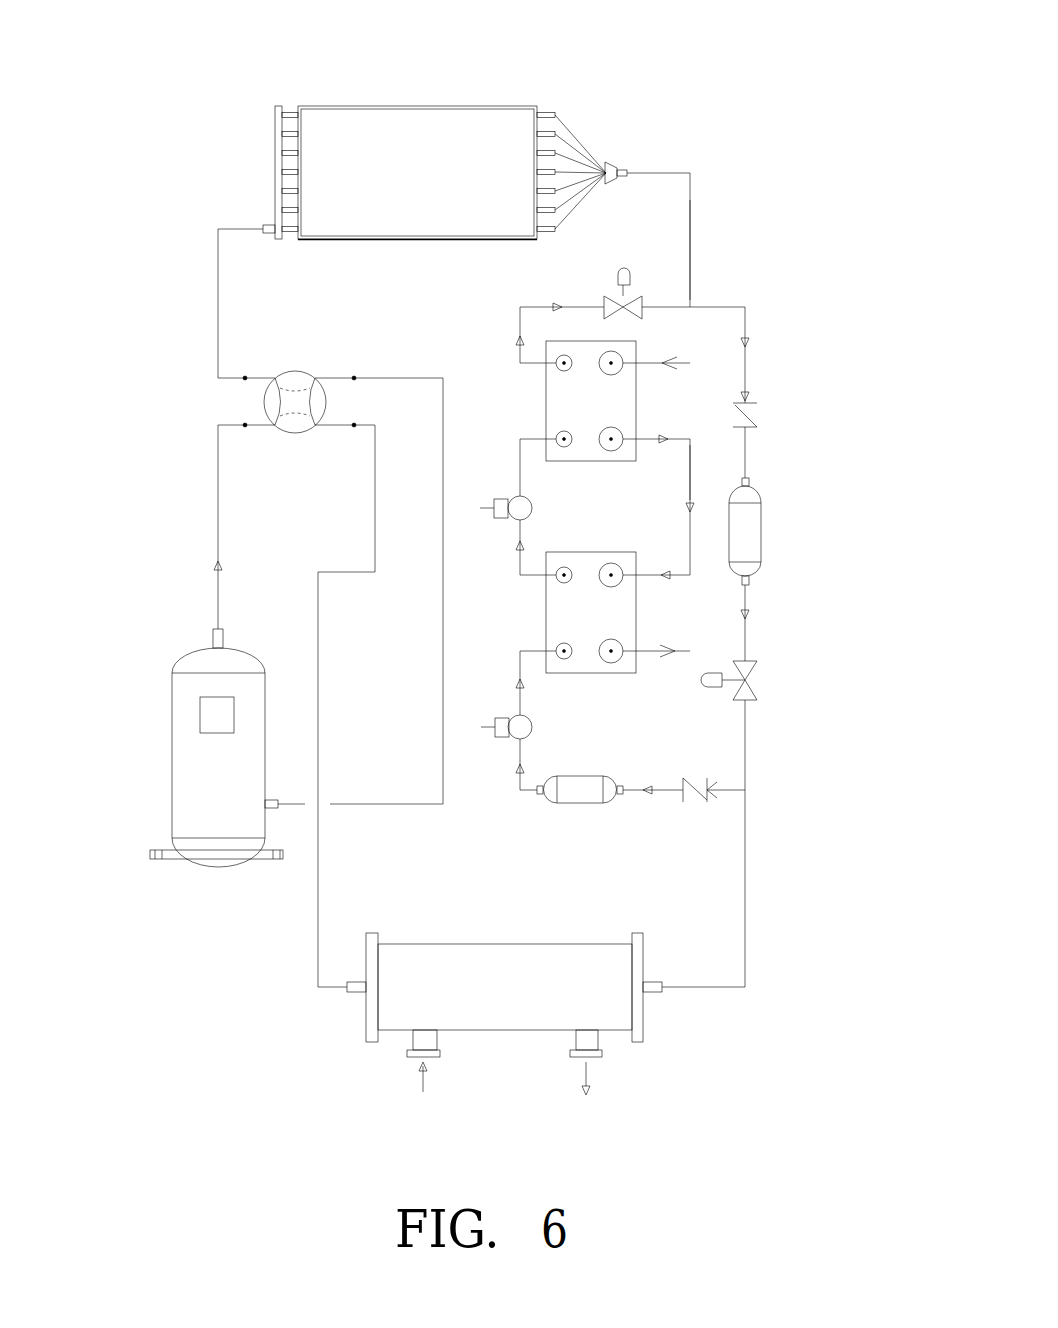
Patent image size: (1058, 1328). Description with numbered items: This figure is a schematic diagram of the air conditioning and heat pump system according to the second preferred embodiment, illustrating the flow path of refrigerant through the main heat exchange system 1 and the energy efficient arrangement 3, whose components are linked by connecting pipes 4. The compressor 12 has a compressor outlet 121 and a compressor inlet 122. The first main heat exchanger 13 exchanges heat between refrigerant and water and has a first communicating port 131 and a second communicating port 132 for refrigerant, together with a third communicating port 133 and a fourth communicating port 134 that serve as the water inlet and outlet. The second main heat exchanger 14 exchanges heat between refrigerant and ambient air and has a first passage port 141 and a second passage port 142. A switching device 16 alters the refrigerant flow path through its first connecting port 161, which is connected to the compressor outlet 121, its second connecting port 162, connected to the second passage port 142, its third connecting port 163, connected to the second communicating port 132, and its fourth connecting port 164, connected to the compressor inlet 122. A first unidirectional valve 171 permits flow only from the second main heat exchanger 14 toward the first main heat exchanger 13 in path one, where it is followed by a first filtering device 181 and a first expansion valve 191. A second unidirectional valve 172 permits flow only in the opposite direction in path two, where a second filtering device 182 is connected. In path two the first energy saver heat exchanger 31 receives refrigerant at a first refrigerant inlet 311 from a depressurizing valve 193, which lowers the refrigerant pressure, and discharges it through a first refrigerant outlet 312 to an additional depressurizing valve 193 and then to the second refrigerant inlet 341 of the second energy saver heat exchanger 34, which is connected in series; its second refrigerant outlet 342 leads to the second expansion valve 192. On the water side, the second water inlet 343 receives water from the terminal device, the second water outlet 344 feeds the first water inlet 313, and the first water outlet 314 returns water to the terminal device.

The main heat exchange system 1 is at (278, 901).
The energy efficient arrangement 3 is at (688, 459).
The connecting pipes 4 is at (690, 247).
The compressor 12 is at (185, 737).
The compressor outlet 121 is at (187, 640).
The compressor inlet 122 is at (279, 766).
The first main heat exchanger 13 is at (500, 1010).
The first communicating port 131 is at (681, 1004).
The second communicating port 132 is at (336, 1013).
The third communicating port 133 is at (389, 1054).
The fourth communicating port 134 is at (616, 1078).
The second main heat exchanger 14 is at (386, 125).
The first passage port 141 is at (634, 139).
The second passage port 142 is at (236, 210).
The switching device 16 is at (267, 402).
The first connecting port 161 is at (255, 438).
The second connecting port 162 is at (256, 366).
The third connecting port 163 is at (300, 442).
The fourth connecting port 164 is at (291, 357).
The first unidirectional valve 171 is at (747, 413).
The second unidirectional valve 172 is at (683, 801).
The first filtering device 181 is at (755, 538).
The second filtering device 182 is at (580, 792).
The first expansion valve 191 is at (752, 703).
The second expansion valve 192 is at (626, 262).
The depressurizing valve 193 is at (494, 508).
The first energy saver heat exchanger 31 is at (627, 608).
The first refrigerant inlet 311 is at (541, 686).
The first refrigerant outlet 312 is at (540, 609).
The first water inlet 313 is at (644, 559).
The first water outlet 314 is at (637, 676).
The second energy saver heat exchanger 34 is at (577, 392).
The second refrigerant inlet 341 is at (590, 424).
The second refrigerant outlet 342 is at (590, 348).
The second water inlet 343 is at (637, 343).
The second water outlet 344 is at (643, 424).